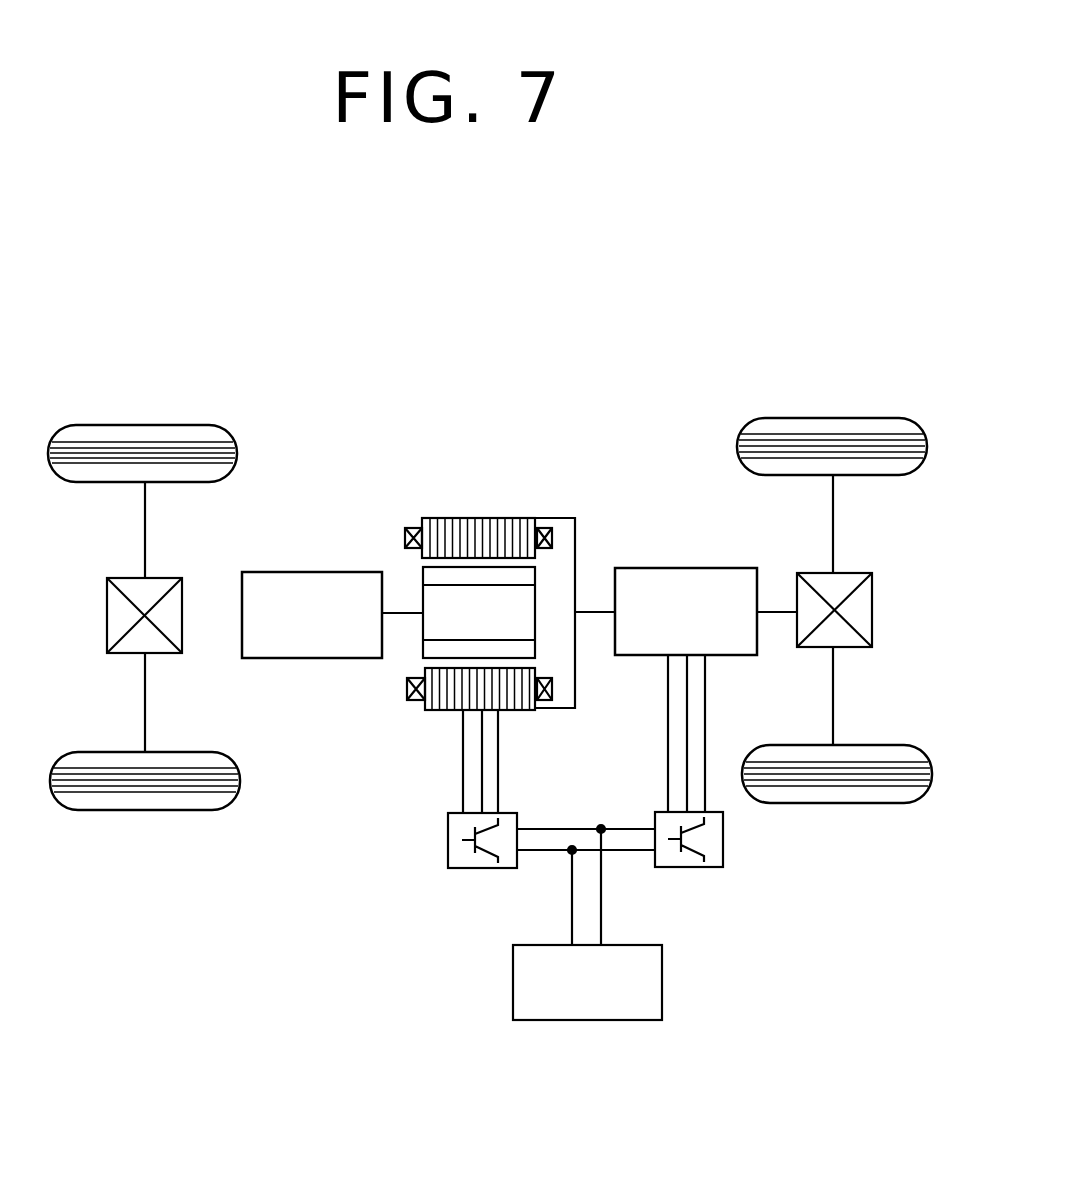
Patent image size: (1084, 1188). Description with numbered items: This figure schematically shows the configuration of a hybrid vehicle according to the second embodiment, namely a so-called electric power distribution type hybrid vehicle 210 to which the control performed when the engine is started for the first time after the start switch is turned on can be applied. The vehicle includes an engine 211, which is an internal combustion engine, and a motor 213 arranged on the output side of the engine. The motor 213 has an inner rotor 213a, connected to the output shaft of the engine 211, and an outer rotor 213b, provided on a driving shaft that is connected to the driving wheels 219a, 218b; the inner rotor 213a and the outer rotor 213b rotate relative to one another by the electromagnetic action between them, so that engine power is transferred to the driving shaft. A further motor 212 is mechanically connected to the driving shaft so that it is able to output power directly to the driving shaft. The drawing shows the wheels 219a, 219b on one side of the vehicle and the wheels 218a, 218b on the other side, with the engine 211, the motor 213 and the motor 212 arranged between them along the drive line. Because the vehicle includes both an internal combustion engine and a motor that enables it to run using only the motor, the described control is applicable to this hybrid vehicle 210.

The electric power distribution type hybrid vehicle 210 is at (630, 380).
The engine 211 is at (307, 658).
The motor 212 is at (687, 567).
The motor 213 is at (522, 378).
The inner rotor 213a is at (423, 597).
The outer rotor 213b is at (480, 518).
The driving wheel 218a is at (832, 418).
The driving wheel 218b is at (837, 803).
The driving wheel 219a is at (143, 425).
The driving wheel 219b is at (148, 810).